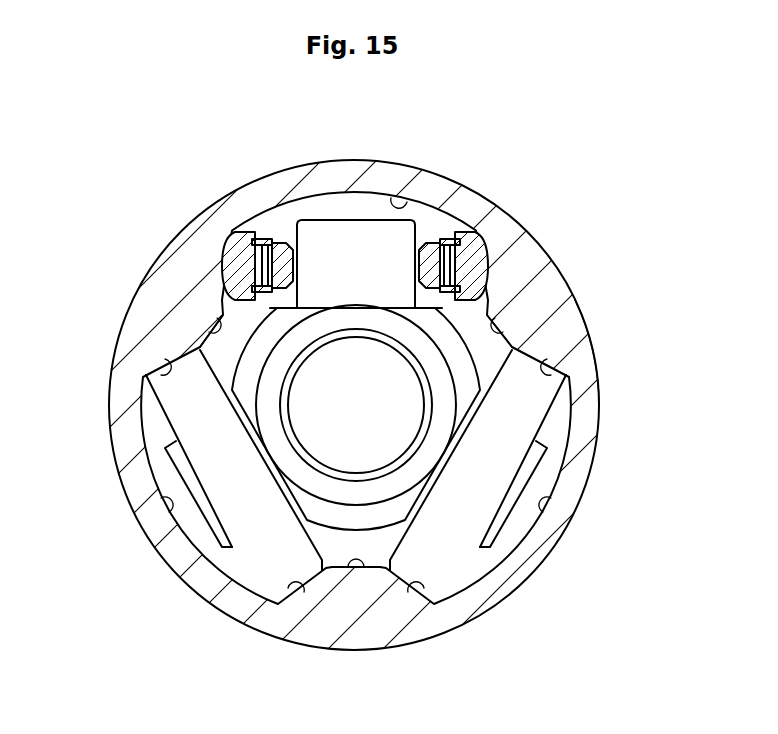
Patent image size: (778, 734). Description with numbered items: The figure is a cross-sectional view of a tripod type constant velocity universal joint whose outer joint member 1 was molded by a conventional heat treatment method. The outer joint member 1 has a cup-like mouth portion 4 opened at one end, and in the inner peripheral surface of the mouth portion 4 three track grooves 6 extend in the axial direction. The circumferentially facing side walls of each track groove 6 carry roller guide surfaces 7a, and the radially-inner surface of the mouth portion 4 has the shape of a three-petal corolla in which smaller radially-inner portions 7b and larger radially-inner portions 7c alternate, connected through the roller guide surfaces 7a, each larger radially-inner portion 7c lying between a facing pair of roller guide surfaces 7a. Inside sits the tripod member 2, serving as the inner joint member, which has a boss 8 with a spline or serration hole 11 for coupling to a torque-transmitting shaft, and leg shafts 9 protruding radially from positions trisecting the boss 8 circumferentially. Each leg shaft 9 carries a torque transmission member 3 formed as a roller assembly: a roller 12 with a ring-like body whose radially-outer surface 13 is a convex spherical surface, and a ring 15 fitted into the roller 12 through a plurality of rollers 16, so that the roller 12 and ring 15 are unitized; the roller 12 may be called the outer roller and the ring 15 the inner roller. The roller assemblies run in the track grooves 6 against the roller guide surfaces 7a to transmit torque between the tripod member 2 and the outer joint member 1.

The outer joint member 1 is at (178, 238).
The tripod member 2 is at (548, 313).
The torque transmission member 3 is at (462, 230).
The mouth portion 4 is at (600, 343).
The track groove 6 is at (340, 205).
The roller guide surface 7a is at (152, 366).
The smaller radially-inner portion 7b is at (218, 318).
The larger radially-inner portion 7c is at (405, 200).
The boss 8 is at (348, 495).
The leg shaft 9 is at (371, 225).
The spline hole or serration hole 11 is at (347, 337).
The roller 12 is at (450, 262).
The radially-outer surface 13 is at (512, 262).
The ring 15 is at (280, 243).
The rollers 16 is at (263, 260).